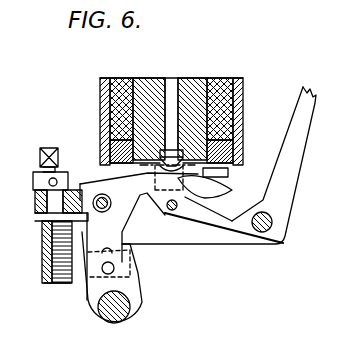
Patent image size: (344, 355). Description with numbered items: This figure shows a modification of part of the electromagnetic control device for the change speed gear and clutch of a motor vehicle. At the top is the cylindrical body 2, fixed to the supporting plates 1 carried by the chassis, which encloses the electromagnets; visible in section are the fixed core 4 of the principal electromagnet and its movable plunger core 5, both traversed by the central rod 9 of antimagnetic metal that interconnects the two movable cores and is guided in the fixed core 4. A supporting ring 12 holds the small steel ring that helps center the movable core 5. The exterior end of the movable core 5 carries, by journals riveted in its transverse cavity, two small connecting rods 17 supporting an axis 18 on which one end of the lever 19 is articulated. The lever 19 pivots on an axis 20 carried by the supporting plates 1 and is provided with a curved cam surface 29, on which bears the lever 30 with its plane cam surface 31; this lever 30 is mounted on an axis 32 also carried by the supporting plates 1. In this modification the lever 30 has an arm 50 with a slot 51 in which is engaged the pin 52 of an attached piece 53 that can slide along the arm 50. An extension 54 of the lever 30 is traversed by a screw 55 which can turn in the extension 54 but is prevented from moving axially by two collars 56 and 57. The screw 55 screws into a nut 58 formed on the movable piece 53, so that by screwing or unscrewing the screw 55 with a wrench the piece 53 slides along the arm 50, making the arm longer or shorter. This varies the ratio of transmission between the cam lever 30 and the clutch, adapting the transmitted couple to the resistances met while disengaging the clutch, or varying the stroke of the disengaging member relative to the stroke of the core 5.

The supporting plates 1 is at (264, 190).
The cylindrical body 2 is at (243, 108).
The fixed core 4 is at (100, 95).
The movable plunger core 5 is at (200, 84).
The central rod 9 is at (172, 80).
The supporting ring 12 is at (237, 150).
The connecting rods 17 is at (177, 222).
The axis 18 is at (177, 205).
The lever 19 is at (292, 130).
The axis 20 is at (272, 222).
The curved cam surface 29 is at (212, 210).
The lever 30 is at (138, 196).
The plane cam surface 31 is at (222, 198).
The axis 32 is at (116, 200).
The arm 50 is at (118, 228).
The slot 51 is at (126, 253).
The pin 52 is at (115, 272).
The attached piece 53 is at (131, 305).
The extension 54 is at (47, 216).
The screw 55 is at (70, 285).
The collar 56 is at (86, 228).
The collar 57 is at (58, 172).
The nut 58 is at (48, 284).